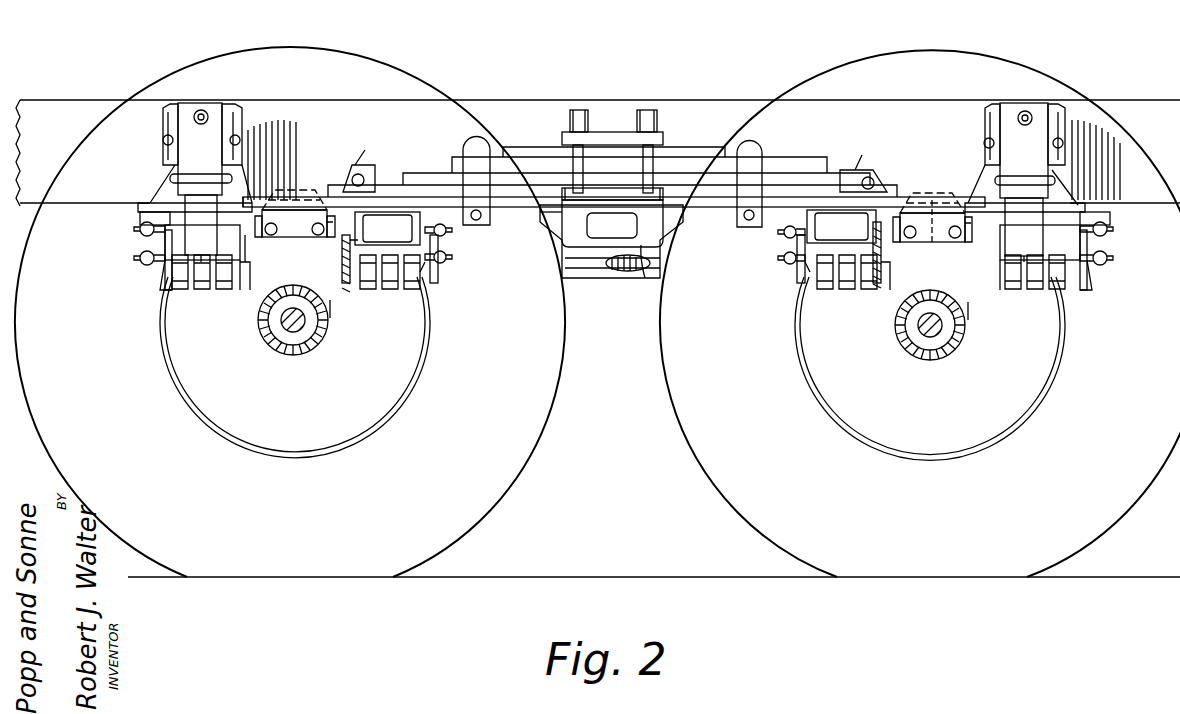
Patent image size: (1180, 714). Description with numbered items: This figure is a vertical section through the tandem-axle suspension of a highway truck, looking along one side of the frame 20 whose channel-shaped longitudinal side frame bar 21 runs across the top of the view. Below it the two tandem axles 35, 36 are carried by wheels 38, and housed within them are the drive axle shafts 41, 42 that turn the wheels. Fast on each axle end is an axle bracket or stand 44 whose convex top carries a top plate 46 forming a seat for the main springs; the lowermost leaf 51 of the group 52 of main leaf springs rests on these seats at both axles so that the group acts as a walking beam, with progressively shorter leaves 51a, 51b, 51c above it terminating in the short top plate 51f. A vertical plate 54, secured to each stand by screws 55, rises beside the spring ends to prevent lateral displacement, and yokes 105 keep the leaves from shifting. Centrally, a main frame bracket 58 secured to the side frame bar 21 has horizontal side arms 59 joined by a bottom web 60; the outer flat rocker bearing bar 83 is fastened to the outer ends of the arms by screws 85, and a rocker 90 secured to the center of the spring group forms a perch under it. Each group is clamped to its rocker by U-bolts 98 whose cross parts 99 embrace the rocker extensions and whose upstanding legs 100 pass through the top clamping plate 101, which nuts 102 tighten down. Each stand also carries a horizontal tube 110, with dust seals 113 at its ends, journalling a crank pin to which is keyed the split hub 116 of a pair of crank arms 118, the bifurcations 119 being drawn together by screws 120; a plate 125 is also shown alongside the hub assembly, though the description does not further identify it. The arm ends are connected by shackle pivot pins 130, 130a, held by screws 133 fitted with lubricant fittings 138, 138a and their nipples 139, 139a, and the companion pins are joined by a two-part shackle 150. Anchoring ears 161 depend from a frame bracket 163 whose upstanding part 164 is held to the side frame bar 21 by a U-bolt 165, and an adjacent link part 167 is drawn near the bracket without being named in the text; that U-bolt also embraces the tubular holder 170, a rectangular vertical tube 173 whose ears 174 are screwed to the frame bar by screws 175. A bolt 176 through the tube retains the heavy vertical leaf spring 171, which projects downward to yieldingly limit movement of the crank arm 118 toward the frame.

The frame 20 is at (1140, 100).
The longitudinal side frame bar 21 is at (50, 104).
The tandem axle 35 is at (290, 355).
The tandem axle 36 is at (925, 362).
The wheel 38 is at (462, 532).
The drive axle shaft 41 is at (295, 333).
The drive axle shaft 42 is at (926, 338).
The axle bracket or stand 44 is at (330, 330).
The top plate 46 is at (330, 238).
The lowermost leaf 51 is at (710, 210).
The spring leaf 51a is at (322, 195).
The spring leaf 51b is at (380, 190).
The spring leaf 51c is at (425, 178).
The top plate 51f is at (514, 148).
The group of main leaf springs 52 is at (707, 146).
The vertical plate 54 is at (314, 240).
The screw 55 is at (950, 240).
The main frame bracket 58 is at (672, 278).
The horizontal side arm 59 is at (540, 222).
The bottom web 60 is at (582, 272).
The outer flat rocker bearing bar 83 is at (612, 223).
The screw 85 is at (655, 190).
The rocker 90 is at (644, 280).
The bolt 98 is at (580, 108).
The cross part 99 is at (600, 246).
The upstanding leg 100 is at (640, 167).
The top clamping plate 101 is at (606, 134).
The nut 102 is at (653, 110).
The yoke 105 is at (476, 150).
The horizontal tube 110 is at (613, 239).
The dust seal 113 is at (240, 268).
The split hub 116 is at (165, 245).
The crank arm 118 is at (168, 298).
The bifurcation 119 is at (202, 290).
The screw 120 is at (201, 252).
The plate 125 is at (242, 292).
The shackle pivot pin 130 is at (454, 270).
The shackle pivot pin 130a is at (452, 236).
The screw 133 is at (163, 266).
The lubricant fitting 138 is at (140, 259).
The lubricant fitting 138a is at (1108, 230).
The nipple 139 is at (1108, 259).
The nipple 139a is at (138, 229).
The shackle 150 is at (615, 227).
The anchoring ear 161 is at (140, 218).
The frame bracket 163 is at (156, 191).
The upstanding part 164 is at (240, 178).
The U-bolt 165 is at (170, 178).
The link 167 is at (357, 165).
The tubular holder 170 is at (218, 103).
The heavy vertical leaf spring 171 is at (614, 225).
The vertical tube 173 is at (613, 150).
The ear 174 is at (166, 110).
The screw 175 is at (163, 140).
The bolt 176 is at (201, 109).